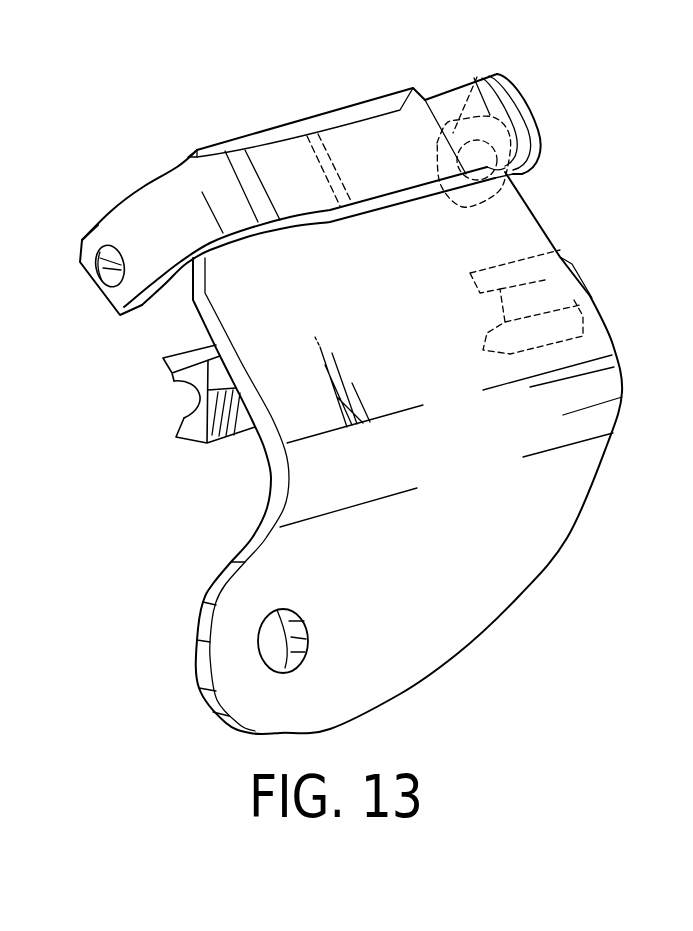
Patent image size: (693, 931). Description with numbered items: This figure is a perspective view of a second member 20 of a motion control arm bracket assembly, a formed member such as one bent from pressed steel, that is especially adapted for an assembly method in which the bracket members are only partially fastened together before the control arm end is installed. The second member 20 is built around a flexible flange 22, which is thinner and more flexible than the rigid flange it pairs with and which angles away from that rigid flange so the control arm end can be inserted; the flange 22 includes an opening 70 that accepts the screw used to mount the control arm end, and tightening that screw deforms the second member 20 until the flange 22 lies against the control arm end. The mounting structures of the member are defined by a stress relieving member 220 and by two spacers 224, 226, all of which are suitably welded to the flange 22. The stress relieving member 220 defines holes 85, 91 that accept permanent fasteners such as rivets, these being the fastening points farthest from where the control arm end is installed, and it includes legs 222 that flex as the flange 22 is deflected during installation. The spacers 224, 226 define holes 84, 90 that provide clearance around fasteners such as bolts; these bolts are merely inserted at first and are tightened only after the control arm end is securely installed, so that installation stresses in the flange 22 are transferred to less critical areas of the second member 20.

The second member 20 is at (261, 77).
The flange 22 is at (413, 628).
The opening 70 is at (270, 628).
The hole 84 is at (187, 397).
The hole 85 is at (112, 272).
The hole 90 is at (557, 303).
The hole 91 is at (538, 137).
The stress relieving member 220 is at (345, 140).
The legs 222 is at (141, 204).
The spacer 224 is at (172, 372).
The spacer 226 is at (567, 250).